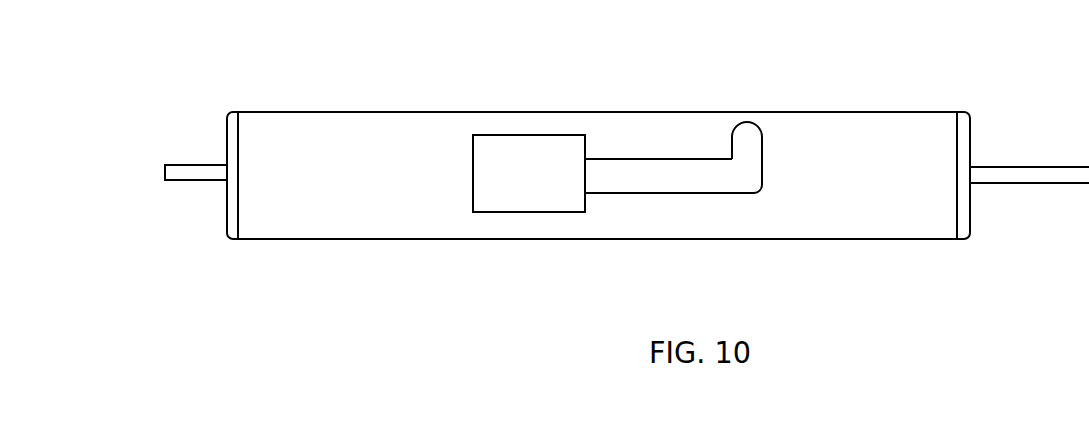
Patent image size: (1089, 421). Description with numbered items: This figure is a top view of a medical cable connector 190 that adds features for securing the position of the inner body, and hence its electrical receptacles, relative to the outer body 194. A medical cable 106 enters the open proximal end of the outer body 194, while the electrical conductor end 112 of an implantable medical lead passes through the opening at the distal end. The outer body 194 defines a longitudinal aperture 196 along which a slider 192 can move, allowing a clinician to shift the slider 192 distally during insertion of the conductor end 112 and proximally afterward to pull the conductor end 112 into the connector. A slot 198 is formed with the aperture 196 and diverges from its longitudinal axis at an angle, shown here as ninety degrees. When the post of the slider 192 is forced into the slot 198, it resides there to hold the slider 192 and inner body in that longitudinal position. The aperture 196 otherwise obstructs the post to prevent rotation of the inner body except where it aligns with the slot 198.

The medical cable 106 is at (1005, 181).
The electrical conductor end 112 is at (182, 170).
The medical cable connector 190 is at (901, 267).
The slider 192 is at (525, 145).
The outer body 194 is at (363, 120).
The longitudinal aperture 196 is at (640, 185).
The slot 198 is at (757, 122).